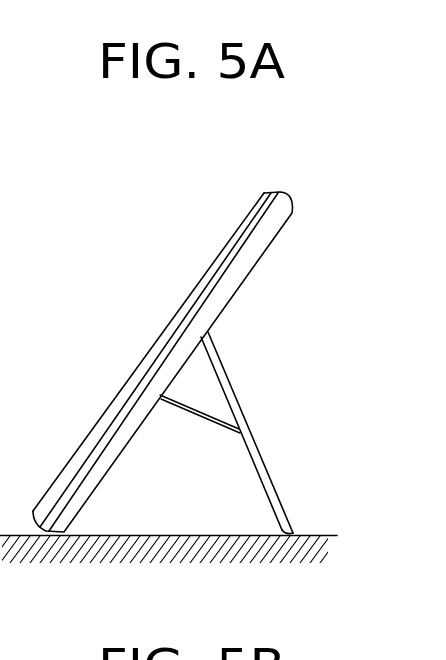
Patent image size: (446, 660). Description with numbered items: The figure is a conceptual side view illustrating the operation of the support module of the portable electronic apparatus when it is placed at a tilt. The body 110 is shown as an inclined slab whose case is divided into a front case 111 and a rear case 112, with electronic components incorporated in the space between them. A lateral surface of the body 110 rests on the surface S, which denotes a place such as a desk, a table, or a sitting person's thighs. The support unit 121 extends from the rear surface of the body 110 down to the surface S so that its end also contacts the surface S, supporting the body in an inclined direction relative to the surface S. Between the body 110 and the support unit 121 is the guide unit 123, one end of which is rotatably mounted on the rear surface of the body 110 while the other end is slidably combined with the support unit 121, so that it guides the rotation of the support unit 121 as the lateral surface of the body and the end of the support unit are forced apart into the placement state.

The body 110 is at (187, 312).
The front case 111 is at (268, 194).
The rear case 112 is at (237, 133).
The support unit 121 is at (263, 462).
The guide unit 123 is at (193, 414).
The surface S is at (243, 553).